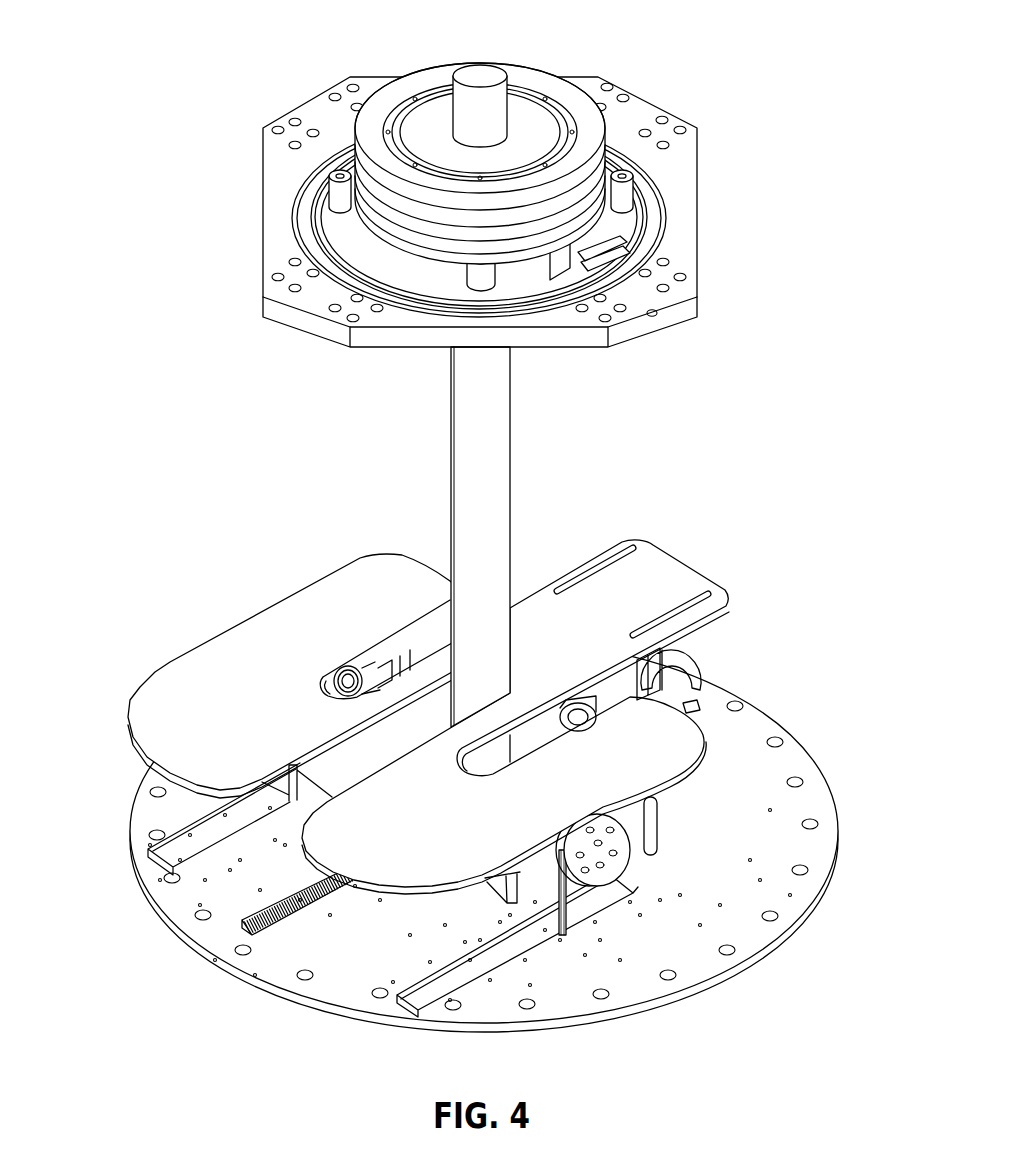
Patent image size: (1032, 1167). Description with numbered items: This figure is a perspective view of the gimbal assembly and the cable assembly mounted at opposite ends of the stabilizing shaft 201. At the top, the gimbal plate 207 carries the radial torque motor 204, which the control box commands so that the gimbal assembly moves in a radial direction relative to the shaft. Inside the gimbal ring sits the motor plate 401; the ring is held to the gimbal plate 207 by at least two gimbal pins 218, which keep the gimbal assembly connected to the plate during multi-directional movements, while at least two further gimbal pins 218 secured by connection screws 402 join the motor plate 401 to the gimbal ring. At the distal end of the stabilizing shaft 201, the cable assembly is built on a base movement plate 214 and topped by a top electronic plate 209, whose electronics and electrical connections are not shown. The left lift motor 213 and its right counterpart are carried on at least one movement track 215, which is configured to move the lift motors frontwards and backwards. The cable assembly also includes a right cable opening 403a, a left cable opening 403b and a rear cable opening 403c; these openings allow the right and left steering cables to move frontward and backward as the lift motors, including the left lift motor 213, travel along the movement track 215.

The stabilizing shaft 201 is at (480, 491).
The radial torque motor 204 is at (558, 80).
The gimbal plate 207 is at (291, 316).
The top electronic plate 209 is at (203, 672).
The left lift motor 213 is at (698, 644).
The base movement plate 214 is at (706, 990).
The movement track 215 is at (256, 925).
The gimbal pins 218 is at (657, 318).
The motor plate 401 is at (343, 232).
The connection screws 402 is at (355, 270).
The right cable opening 403a is at (180, 853).
The left cable opening 403b is at (430, 1000).
The rear cable opening 403c is at (688, 709).